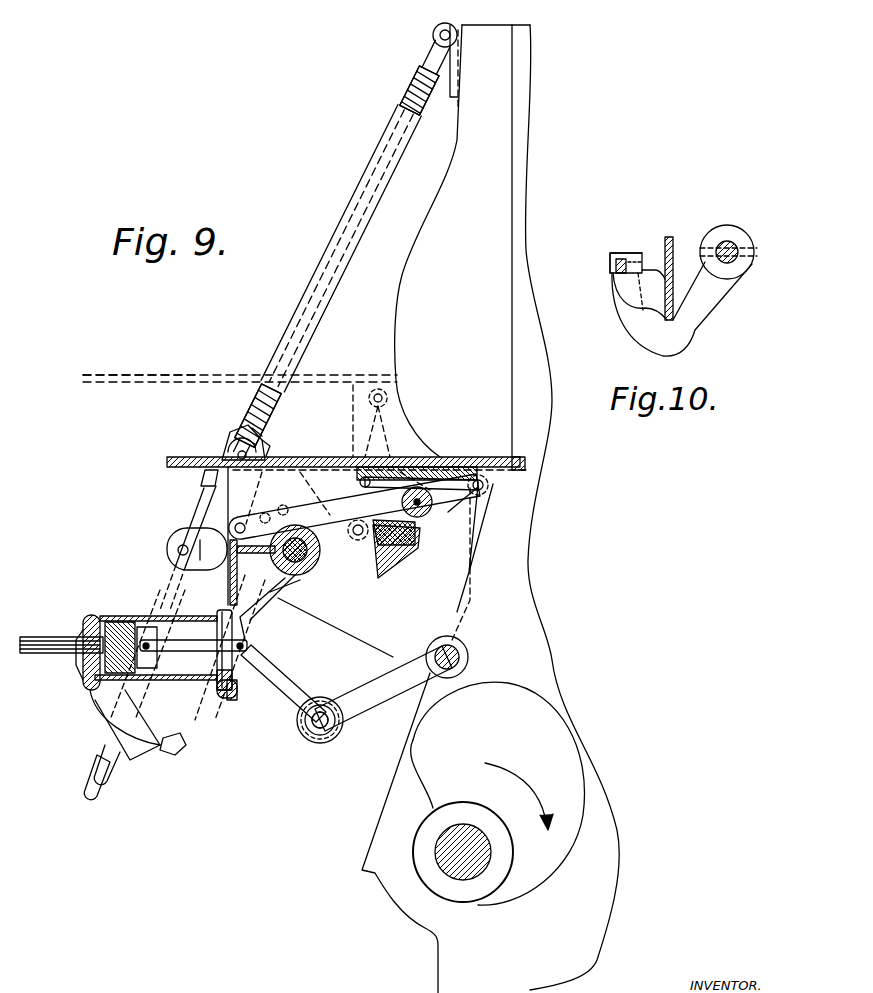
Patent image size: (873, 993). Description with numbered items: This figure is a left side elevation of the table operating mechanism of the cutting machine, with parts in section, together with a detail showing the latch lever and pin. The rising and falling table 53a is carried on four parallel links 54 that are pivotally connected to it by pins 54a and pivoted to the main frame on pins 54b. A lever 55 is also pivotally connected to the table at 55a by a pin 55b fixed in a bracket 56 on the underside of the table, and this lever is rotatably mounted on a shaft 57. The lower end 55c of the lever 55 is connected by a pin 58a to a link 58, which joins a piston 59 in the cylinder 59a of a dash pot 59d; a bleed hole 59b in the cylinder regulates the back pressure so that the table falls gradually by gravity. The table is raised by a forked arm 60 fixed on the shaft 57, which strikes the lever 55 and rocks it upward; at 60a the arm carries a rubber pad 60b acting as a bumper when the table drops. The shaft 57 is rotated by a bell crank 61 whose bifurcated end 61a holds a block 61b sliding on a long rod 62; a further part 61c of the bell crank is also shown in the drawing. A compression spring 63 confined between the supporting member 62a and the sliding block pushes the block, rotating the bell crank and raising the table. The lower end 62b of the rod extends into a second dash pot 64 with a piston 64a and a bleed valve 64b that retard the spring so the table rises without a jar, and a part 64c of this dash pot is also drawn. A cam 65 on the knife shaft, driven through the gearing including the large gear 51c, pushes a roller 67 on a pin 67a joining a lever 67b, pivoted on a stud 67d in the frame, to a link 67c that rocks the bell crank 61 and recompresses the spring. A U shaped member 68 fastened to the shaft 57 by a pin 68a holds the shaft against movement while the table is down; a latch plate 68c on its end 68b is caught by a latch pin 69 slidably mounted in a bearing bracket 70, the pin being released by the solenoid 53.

In FIG. 9, the large gear 51c is at (482, 860).
In FIG. 9, the solenoid 53 is at (296, 460).
In FIG. 9, the rising and falling table 53a is at (322, 378).
In FIG. 9, the parallel links 54 is at (272, 442).
In FIG. 9, the pins 54a is at (388, 399).
In FIG. 9, the pins 54b is at (240, 527).
In FIG. 9, the lever 55 is at (347, 556).
In FIG. 9, the pivotal connection 55a is at (458, 512).
In FIG. 9, the pin 55b is at (422, 512).
In FIG. 9, the lower end of lever 55c is at (250, 655).
In FIG. 9, the bracket 56 is at (452, 500).
In FIG. 9, the shaft 57 is at (305, 578).
In FIG. 9, the link 58 is at (210, 652).
In FIG. 9, the pin 58a is at (242, 655).
In FIG. 9, the piston 59 is at (140, 630).
In FIG. 9, the cylinder 59a is at (196, 680).
In FIG. 9, the bleed hole 59b is at (90, 692).
In FIG. 9, the dash pot 59d is at (82, 676).
In FIG. 9, the forked arm 60 is at (392, 568).
In FIG. 9, the pad location on arm 60a is at (470, 572).
In FIG. 9, the rubber pad 60b is at (380, 560).
In FIG. 9, the bell crank 61 is at (222, 448).
In FIG. 9, the bifurcated end 61a is at (244, 436).
In FIG. 9, the block 61b is at (269, 451).
In FIG. 9, the bracket ear 61c is at (232, 445).
In FIG. 9, the rod 62 is at (330, 298).
In FIG. 9, the supporting member 62a is at (436, 47).
In FIG. 9, the lower end of spring rod 62b is at (100, 765).
In FIG. 9, the compression spring 63 is at (410, 78).
In FIG. 9, the dash pot 64 is at (142, 745).
In FIG. 9, the piston 64a is at (165, 600).
In FIG. 9, the bleed valve 64b is at (186, 748).
In FIG. 9, the bracket lug 64c is at (200, 500).
In FIG. 9, the cam 65 is at (530, 722).
In FIG. 9, the roller 67 is at (320, 744).
In FIG. 9, the pin 67a is at (321, 712).
In FIG. 9, the lever 67b is at (372, 705).
In FIG. 9, the link 67c is at (285, 666).
In FIG. 9, the stud 67d is at (470, 657).
In FIG. 9, the U shaped member 68 is at (284, 585).
In FIG. 10, the U shaped member 68 is at (698, 328).
In FIG. 10, the pin 68a is at (750, 260).
In FIG. 10, the end of arm 68b is at (610, 266).
In FIG. 10, the latch plate 68c is at (622, 254).
In FIG. 10, the latch pin 69 is at (614, 260).
In FIG. 10, the bearing bracket 70 is at (630, 296).